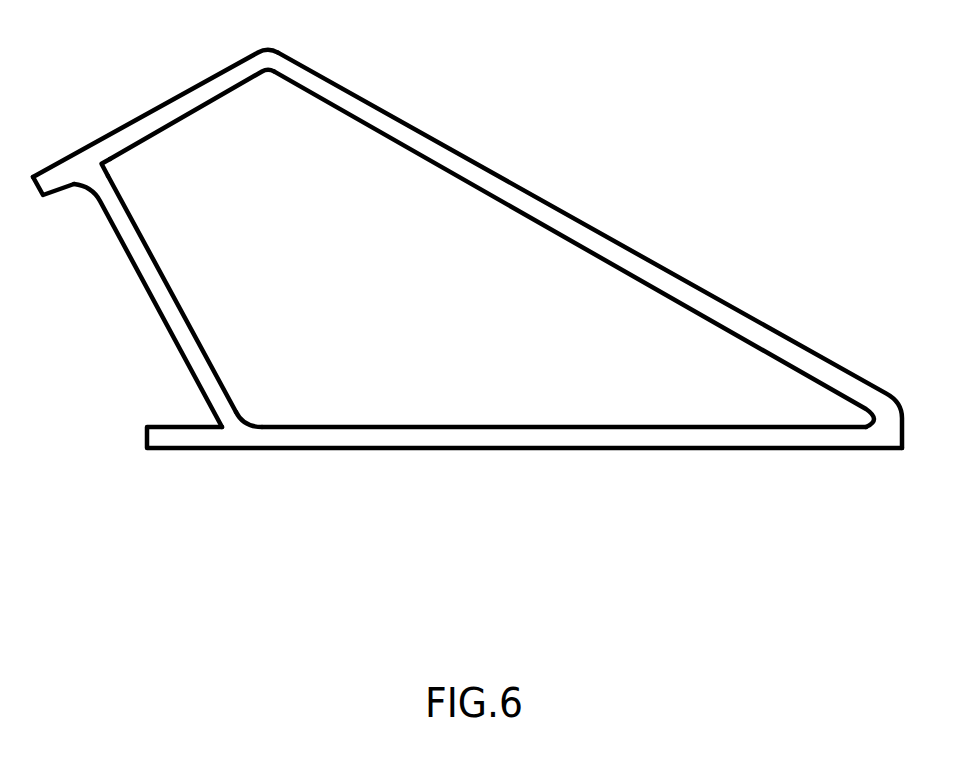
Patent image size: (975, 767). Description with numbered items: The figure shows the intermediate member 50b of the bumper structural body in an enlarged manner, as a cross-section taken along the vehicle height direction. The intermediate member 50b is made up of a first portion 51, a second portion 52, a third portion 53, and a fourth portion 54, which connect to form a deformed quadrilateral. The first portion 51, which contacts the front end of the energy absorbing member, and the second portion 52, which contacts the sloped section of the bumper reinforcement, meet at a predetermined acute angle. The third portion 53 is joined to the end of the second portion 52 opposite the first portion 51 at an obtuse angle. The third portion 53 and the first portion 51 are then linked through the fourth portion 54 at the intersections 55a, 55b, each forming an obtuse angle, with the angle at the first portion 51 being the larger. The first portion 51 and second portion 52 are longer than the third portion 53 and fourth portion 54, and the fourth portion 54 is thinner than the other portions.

The intermediate member 50b is at (467, 285).
The first portion 51 is at (502, 440).
The second portion 52 is at (657, 270).
The third portion 53 is at (158, 115).
The fourth portion 54 is at (149, 293).
The intersection 55a is at (97, 172).
The intersection 55b is at (233, 437).